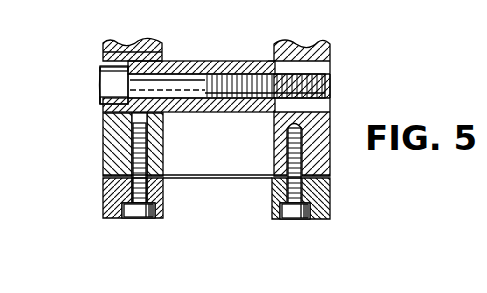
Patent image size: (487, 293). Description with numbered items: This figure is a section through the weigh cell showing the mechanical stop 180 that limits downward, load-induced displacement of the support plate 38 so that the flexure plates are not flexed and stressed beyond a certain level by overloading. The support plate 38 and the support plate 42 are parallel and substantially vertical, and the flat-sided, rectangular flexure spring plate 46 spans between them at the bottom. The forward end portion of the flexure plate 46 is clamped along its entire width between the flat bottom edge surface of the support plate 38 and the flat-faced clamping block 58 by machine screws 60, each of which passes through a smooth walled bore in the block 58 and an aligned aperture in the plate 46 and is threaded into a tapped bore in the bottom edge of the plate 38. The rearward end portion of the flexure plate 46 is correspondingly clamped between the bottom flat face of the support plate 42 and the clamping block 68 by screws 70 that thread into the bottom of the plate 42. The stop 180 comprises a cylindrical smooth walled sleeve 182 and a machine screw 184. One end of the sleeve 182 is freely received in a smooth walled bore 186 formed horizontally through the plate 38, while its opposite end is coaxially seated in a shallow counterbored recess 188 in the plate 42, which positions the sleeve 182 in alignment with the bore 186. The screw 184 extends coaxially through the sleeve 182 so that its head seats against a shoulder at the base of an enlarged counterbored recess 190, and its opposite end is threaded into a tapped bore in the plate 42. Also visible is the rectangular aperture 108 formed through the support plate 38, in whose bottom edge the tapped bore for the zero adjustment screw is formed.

The rectangular aperture 108 is at (120, 46).
The mechanical stop 180 is at (203, 58).
The counterbored recess 188 is at (275, 61).
The support plate 42 is at (332, 50).
The enlarged counterbored recess 190 is at (100, 68).
The machine screw 184 is at (100, 84).
The smooth walled bore 186 is at (100, 100).
The support plate 38 is at (103, 145).
The sleeve 182 is at (183, 113).
The flexure spring plate 46 is at (200, 177).
The clamping block 58 is at (103, 195).
The clamping block 68 is at (331, 192).
The machine screws 60 is at (134, 219).
The screws 70 is at (294, 220).